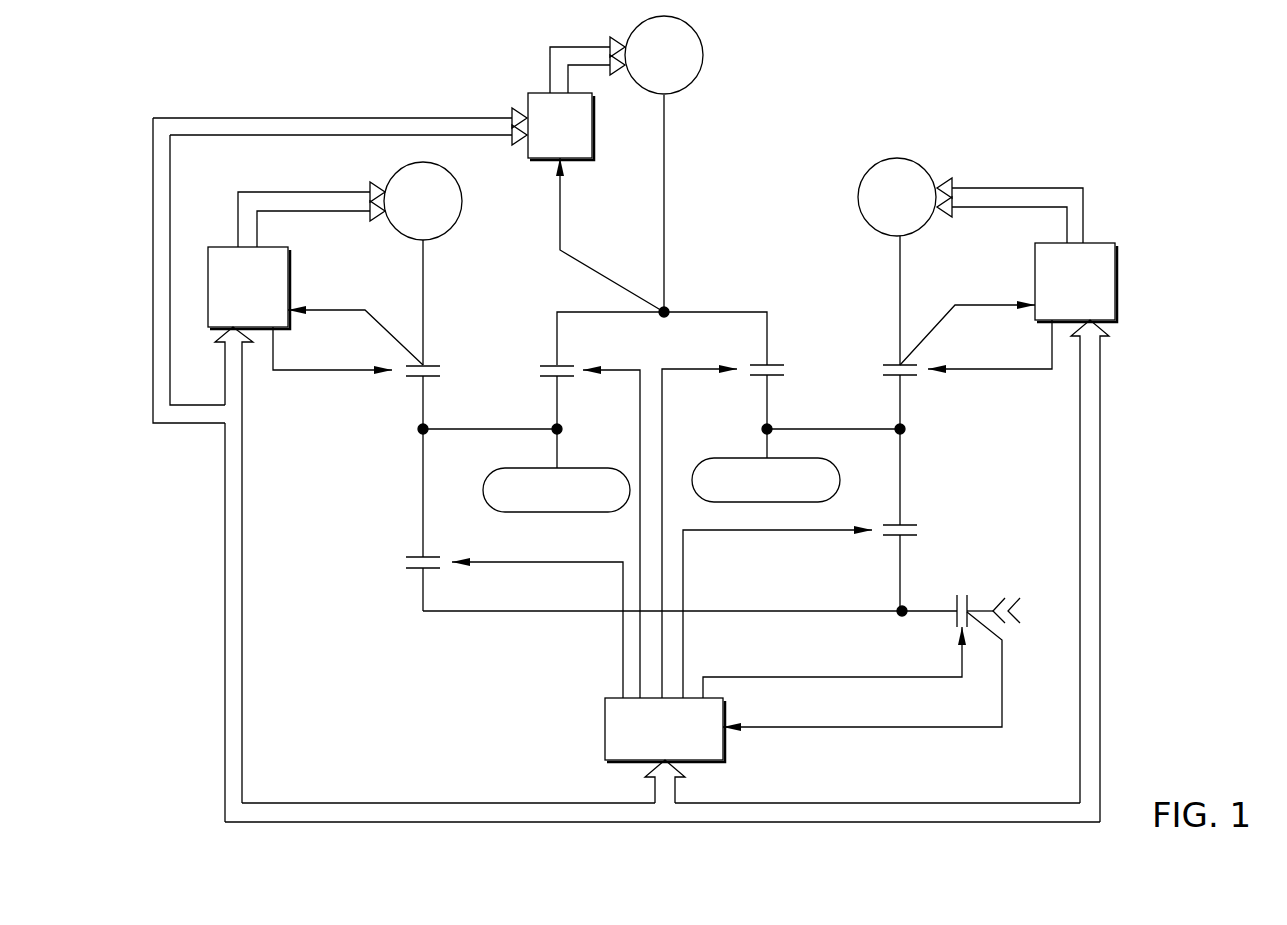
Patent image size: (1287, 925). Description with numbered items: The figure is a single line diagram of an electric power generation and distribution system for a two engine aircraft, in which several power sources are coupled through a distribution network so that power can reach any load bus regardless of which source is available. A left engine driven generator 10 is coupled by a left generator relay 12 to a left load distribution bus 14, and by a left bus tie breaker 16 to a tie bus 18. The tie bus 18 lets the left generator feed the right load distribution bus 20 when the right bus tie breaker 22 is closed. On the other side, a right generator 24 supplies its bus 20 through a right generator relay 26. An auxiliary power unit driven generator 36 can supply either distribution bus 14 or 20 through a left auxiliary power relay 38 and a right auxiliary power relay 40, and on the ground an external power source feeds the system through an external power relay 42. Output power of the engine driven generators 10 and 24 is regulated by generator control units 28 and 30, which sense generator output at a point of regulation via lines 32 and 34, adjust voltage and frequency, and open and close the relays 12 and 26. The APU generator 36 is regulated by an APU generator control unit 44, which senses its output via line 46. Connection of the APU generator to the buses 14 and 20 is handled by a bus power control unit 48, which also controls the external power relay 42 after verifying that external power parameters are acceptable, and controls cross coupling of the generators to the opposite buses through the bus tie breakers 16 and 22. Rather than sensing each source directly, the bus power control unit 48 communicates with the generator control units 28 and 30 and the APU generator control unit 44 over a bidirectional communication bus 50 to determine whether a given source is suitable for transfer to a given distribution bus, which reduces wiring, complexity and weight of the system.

The left engine driven generator 10 is at (460, 218).
The left generator relay 12 is at (430, 360).
The left load distribution bus 14 is at (597, 468).
The left bus tie breaker 16 is at (420, 545).
The tie bus 18 is at (445, 613).
The right load distribution bus 20 is at (737, 458).
The right bus tie breaker 22 is at (912, 522).
The right generator 24 is at (912, 160).
The right generator relay 26 is at (893, 360).
The generator control unit 28 is at (226, 247).
The generator control unit 30 is at (1102, 243).
The line 32 is at (320, 300).
The line 34 is at (998, 305).
The auxiliary power unit driven generator 36 is at (693, 82).
The left auxiliary power relay 38 is at (540, 360).
The right auxiliary power relay 40 is at (773, 362).
The external power relay 42 is at (970, 603).
The APU generator control unit 44 is at (537, 93).
The line 46 is at (560, 210).
The bus power control unit 48 is at (710, 762).
The bidirectional communication bus 50 is at (308, 797).